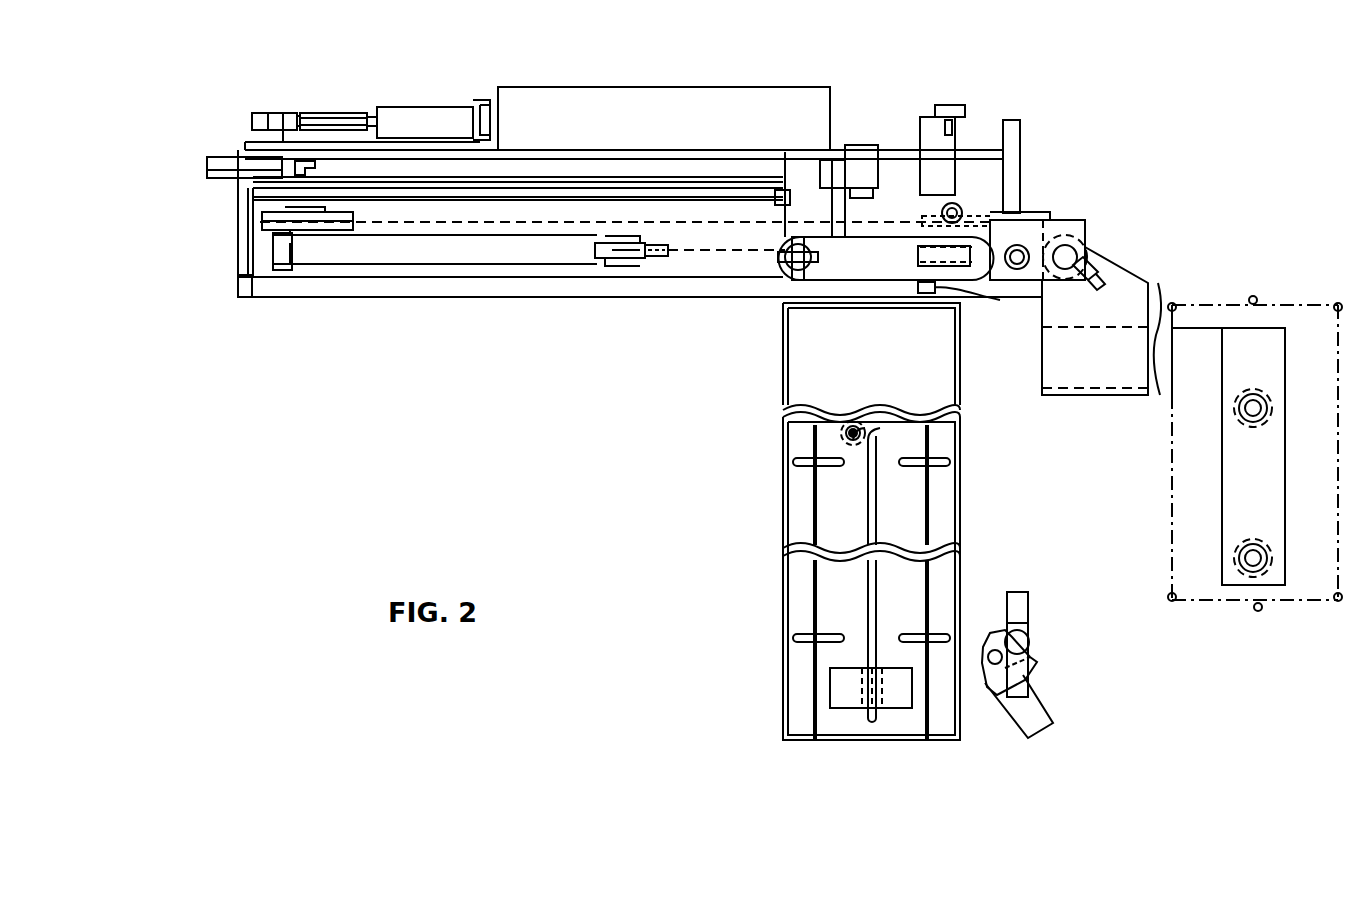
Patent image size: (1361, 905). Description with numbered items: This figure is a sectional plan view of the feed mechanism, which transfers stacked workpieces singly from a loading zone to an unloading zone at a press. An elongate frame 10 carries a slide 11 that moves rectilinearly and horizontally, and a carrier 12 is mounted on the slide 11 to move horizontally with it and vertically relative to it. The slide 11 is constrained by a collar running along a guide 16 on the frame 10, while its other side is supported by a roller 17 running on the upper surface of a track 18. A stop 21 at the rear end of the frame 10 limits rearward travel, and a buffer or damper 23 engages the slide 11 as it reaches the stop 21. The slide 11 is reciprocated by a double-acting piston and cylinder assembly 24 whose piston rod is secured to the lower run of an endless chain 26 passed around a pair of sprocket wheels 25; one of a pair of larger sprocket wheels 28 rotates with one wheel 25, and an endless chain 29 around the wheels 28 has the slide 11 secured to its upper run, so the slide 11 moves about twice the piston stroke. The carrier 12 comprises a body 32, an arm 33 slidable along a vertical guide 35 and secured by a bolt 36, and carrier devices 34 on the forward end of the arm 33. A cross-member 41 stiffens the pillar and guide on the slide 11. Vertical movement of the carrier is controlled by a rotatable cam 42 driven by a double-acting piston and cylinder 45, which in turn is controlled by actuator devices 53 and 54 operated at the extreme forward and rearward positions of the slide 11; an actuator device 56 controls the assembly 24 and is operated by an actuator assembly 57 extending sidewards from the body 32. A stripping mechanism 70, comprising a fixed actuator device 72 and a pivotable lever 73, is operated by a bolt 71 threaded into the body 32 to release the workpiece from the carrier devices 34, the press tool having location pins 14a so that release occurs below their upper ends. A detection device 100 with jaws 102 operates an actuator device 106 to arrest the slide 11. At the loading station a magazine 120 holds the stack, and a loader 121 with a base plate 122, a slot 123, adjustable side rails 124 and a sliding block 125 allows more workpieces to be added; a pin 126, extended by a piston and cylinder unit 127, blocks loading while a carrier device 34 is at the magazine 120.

The frame 10 is at (578, 288).
The slide 11 is at (973, 173).
The carrier 12 is at (1058, 210).
The location pins 14a is at (1340, 305).
The guide 16 is at (672, 177).
The roller 17 is at (940, 290).
The track 18 is at (748, 288).
The stop 21 is at (255, 240).
The buffer or damper 23 is at (307, 160).
The double-acting piston and cylinder assembly 24 is at (468, 247).
The sprocket wheels 25 is at (638, 263).
The endless chain 26 is at (707, 250).
The sprocket wheels 28 is at (338, 240).
The endless chain 29 is at (420, 222).
The body 32 is at (1033, 217).
The arm 33 is at (1157, 337).
The carrier devices 34 is at (1240, 408).
The vertical guide 35 is at (1073, 253).
The bolt 36 is at (1097, 280).
The cross-member 41 is at (862, 265).
The cam 42 is at (333, 113).
The double-acting piston and cylinder 45 is at (416, 123).
The actuator device 53 is at (827, 167).
The actuator device 54 is at (248, 172).
The actuator device 56 is at (868, 187).
The actuator assembly 57 is at (840, 212).
The stripping mechanism 70 is at (963, 127).
The bolt 71 is at (963, 207).
The actuator device 72 is at (950, 113).
The lever 73 is at (950, 147).
The detection device 100 is at (1030, 676).
The jaws 102 is at (1018, 604).
The actuator device 106 is at (1033, 717).
The magazine 120 is at (933, 338).
The loader 121 is at (935, 515).
The base plate 122 is at (830, 515).
The slot 123 is at (872, 484).
The side rails 124 is at (940, 572).
The block 125 is at (845, 700).
The pin 126 is at (854, 428).
The piston and cylinder unit 127 is at (883, 427).